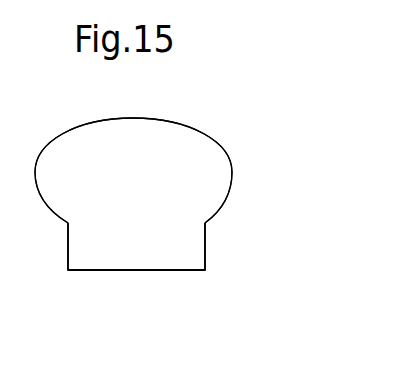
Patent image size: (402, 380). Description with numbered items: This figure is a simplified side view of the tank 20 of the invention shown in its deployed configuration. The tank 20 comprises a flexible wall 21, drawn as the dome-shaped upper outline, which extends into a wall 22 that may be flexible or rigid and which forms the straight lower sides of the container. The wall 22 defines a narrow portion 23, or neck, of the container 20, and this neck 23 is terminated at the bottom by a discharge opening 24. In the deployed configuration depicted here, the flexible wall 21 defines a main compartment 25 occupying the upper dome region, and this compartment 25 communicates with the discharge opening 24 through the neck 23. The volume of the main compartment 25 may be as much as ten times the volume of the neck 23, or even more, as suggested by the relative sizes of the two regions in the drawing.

The tank 20 is at (228, 157).
The flexible wall 21 is at (200, 132).
The wall 22 is at (67, 240).
The narrow portion 23 is at (153, 250).
The discharge opening 24 is at (115, 272).
The main compartment 25 is at (150, 184).